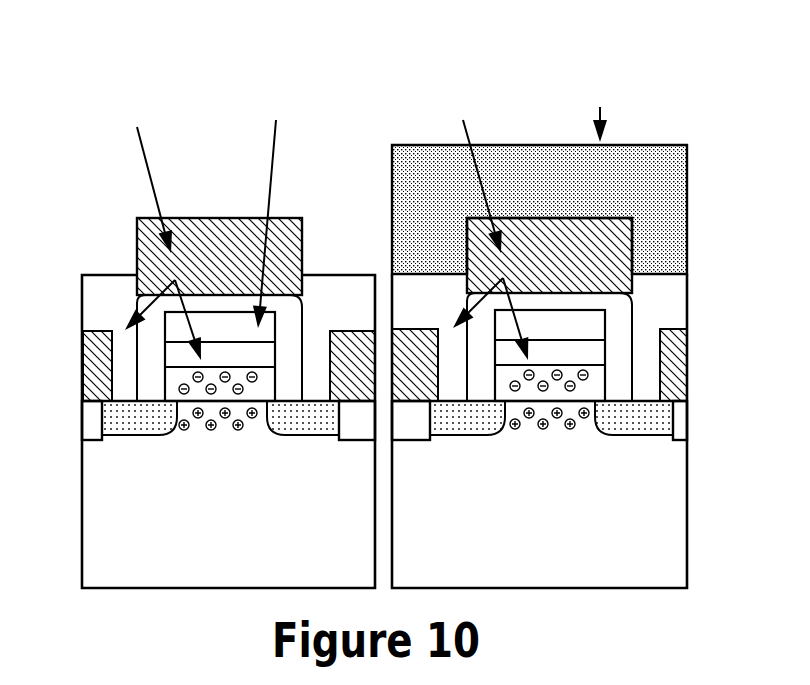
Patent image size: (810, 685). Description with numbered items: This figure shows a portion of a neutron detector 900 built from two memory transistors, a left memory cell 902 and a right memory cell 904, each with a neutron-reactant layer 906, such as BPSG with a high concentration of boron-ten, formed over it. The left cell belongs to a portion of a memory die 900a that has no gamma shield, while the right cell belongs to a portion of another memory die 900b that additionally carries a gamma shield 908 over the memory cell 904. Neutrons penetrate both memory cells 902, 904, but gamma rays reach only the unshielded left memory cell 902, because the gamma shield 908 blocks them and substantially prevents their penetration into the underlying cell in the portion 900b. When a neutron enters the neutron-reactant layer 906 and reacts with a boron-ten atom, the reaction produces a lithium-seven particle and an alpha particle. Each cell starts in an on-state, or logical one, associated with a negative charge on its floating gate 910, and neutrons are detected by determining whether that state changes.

The neutron detector 900 is at (386, 56).
The portion of a memory die 900a is at (217, 76).
The portion of another memory die 900b is at (551, 74).
The left memory cell 902 is at (91, 148).
The right memory cell 904 is at (676, 88).
The neutron-reactant layer 906 is at (137, 238).
The gamma shield 908 is at (670, 144).
The floating gate 910 is at (607, 380).